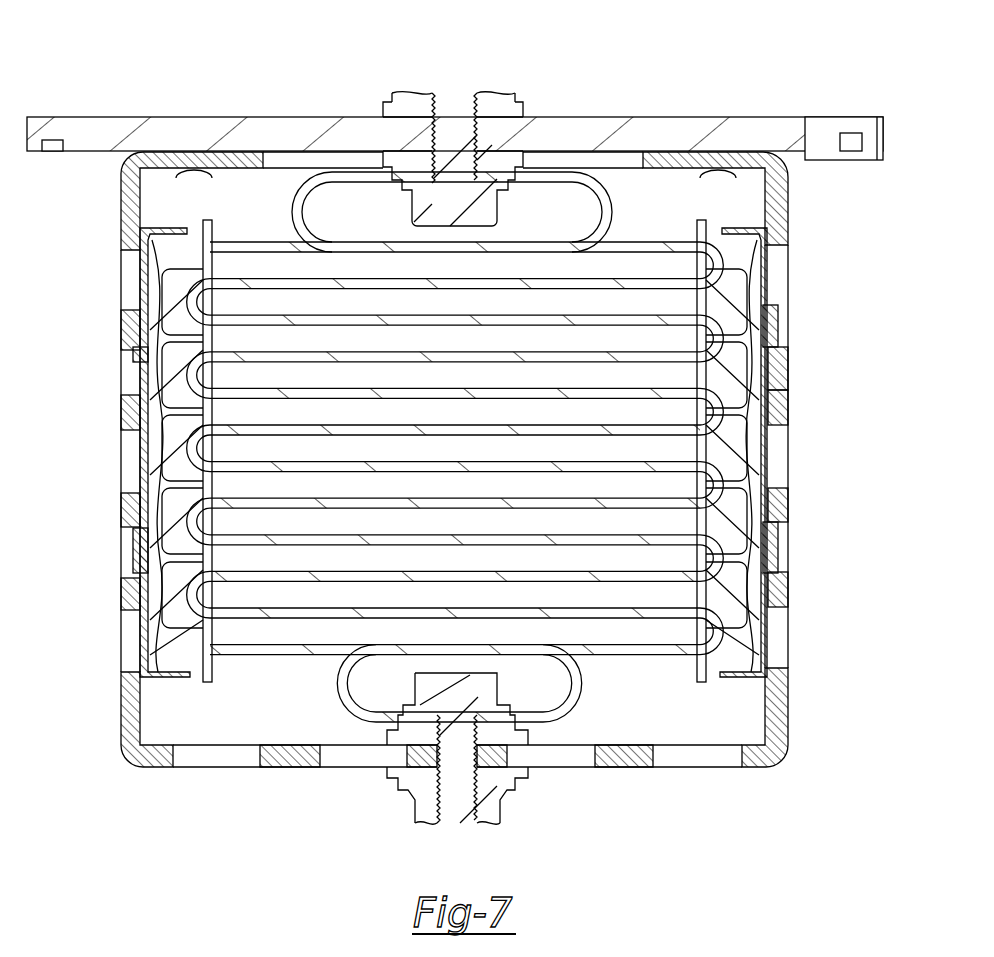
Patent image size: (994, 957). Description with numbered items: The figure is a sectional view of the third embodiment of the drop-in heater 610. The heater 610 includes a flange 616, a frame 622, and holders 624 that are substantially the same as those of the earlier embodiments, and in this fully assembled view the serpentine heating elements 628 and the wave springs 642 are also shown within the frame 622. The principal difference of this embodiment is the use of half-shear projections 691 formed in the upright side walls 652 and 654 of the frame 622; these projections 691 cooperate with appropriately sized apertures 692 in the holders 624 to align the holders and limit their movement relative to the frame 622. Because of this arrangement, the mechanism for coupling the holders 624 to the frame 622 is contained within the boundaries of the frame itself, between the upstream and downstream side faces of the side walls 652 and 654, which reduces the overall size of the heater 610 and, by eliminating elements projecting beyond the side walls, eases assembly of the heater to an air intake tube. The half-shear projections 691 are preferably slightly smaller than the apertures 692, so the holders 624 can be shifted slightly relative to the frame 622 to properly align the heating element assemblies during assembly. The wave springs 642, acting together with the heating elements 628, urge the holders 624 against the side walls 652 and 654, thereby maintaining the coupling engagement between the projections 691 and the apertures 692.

The flange 616 is at (774, 106).
The heater 610 is at (828, 234).
The frame 622 is at (795, 220).
The holders 624 is at (154, 224).
The heating elements 628 is at (605, 662).
The wave springs 642 is at (150, 370).
The upright side wall 652 is at (124, 515).
The upright side wall 654 is at (786, 408).
The half-shear projections 691 is at (122, 418).
The apertures 692 is at (135, 352).